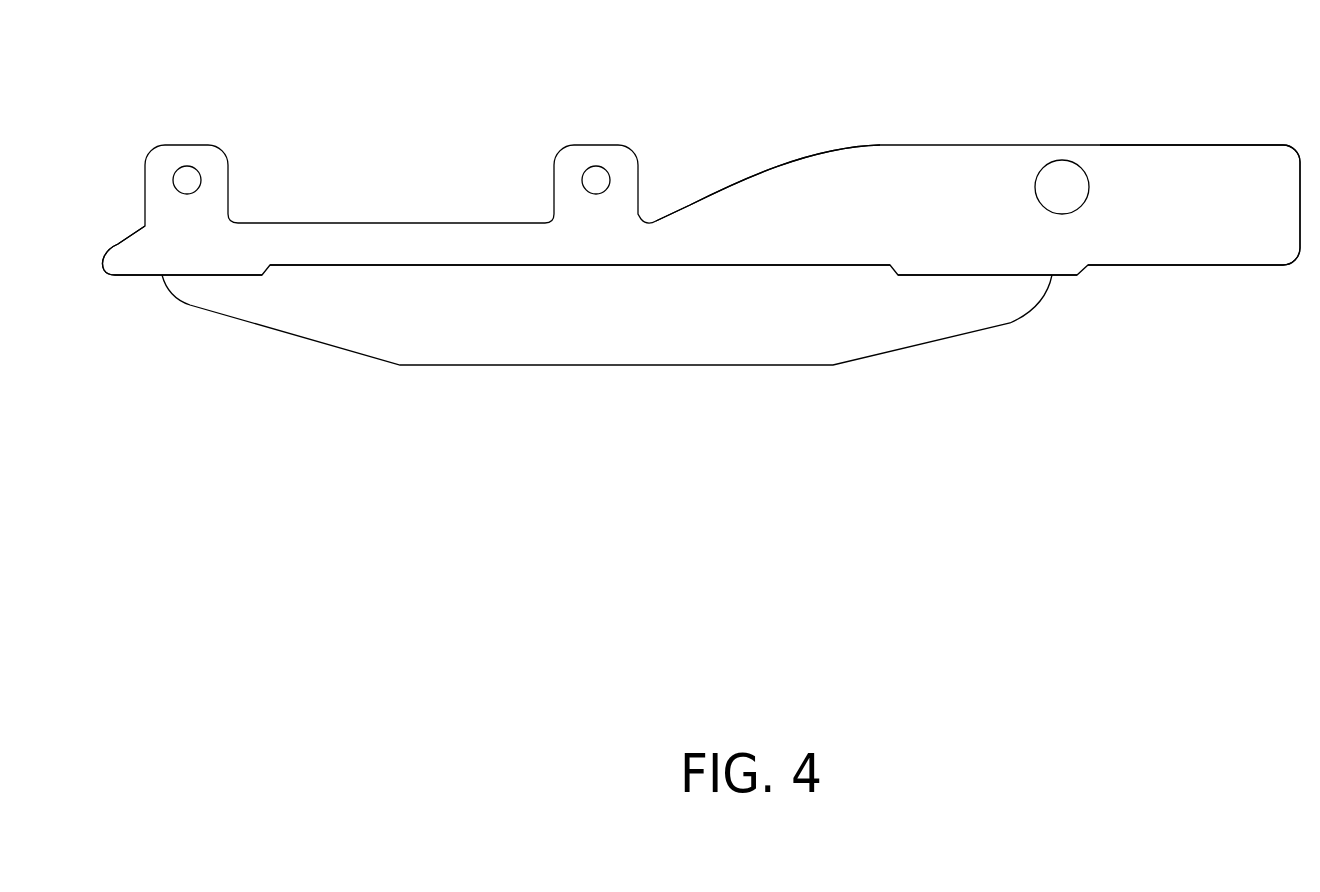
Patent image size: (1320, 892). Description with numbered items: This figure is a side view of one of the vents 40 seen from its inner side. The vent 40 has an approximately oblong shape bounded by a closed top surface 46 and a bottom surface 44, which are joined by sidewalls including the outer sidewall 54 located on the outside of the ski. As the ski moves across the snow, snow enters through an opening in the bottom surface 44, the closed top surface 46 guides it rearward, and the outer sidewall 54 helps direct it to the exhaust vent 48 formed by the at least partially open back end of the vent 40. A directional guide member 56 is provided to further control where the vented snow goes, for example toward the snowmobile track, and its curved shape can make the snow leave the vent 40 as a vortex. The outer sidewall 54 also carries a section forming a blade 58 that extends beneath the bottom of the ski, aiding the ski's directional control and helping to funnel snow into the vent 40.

The vent 40 is at (880, 198).
The bottom surface 44 is at (330, 266).
The top surface 46 is at (773, 163).
The exhaust vent 48 is at (1117, 352).
The outer sidewall 54 is at (688, 233).
The directional guide member 56 is at (1238, 198).
The blade 58 is at (472, 366).